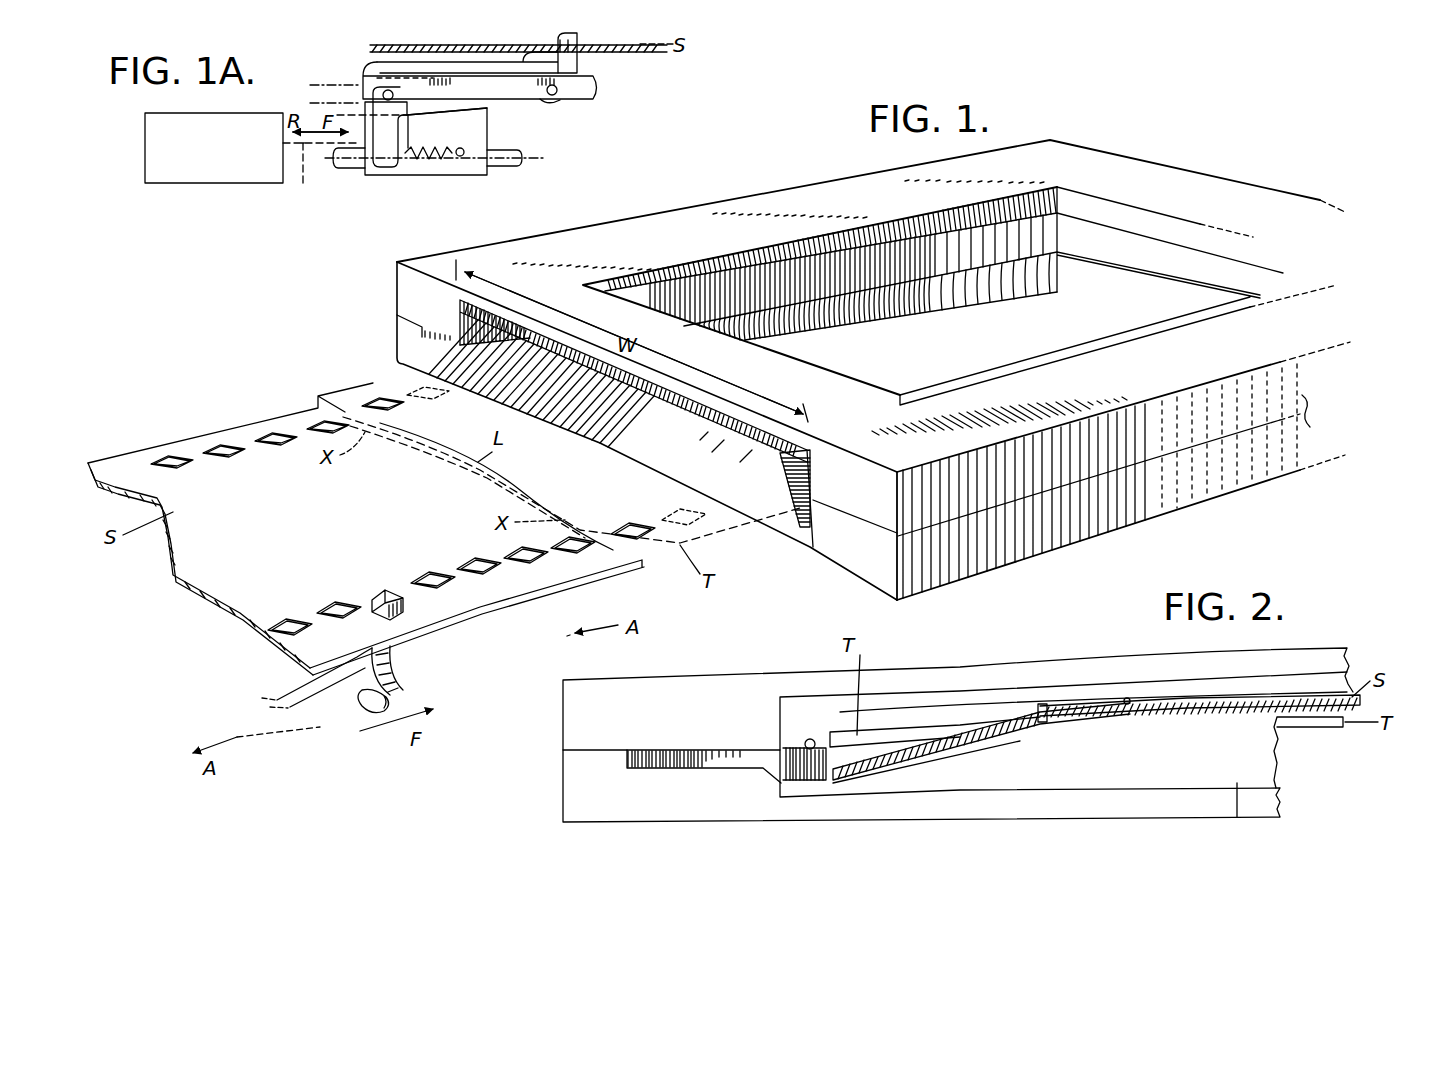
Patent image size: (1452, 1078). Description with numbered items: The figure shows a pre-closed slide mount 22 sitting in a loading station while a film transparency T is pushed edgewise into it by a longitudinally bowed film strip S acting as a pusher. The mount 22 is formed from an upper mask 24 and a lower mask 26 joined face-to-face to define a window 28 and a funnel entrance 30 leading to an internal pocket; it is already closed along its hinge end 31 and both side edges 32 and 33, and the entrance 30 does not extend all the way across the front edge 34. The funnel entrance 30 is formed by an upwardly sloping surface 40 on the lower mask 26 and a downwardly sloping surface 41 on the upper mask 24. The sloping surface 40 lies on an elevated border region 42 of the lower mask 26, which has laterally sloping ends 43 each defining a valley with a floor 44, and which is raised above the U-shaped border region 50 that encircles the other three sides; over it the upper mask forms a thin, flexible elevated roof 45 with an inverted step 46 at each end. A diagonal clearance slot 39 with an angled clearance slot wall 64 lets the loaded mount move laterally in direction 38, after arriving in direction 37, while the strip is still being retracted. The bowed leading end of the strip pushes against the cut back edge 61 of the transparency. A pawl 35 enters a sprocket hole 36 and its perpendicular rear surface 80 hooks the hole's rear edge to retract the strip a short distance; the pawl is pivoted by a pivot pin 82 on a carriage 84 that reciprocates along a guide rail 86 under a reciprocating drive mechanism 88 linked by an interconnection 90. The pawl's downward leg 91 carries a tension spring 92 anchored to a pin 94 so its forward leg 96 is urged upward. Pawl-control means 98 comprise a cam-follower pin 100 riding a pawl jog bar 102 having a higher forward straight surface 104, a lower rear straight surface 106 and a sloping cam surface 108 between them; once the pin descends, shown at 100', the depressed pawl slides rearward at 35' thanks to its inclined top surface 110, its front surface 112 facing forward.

In FIG. 1, the pre-closed slide mount 22 is at (1152, 152).
In FIG. 1, the upper mask 24 is at (1187, 442).
In FIG. 2, the upper mask 24 is at (565, 716).
In FIG. 1, the lower mask 26 is at (1248, 478).
In FIG. 2, the lower mask 26 is at (568, 784).
In FIG. 1, the window 28 is at (989, 350).
In FIG. 1, the funnel entrance 30 is at (780, 503).
In FIG. 2, the funnel entrance 30 is at (1282, 720).
In FIG. 1, the hinge end 31 is at (1222, 194).
In FIG. 1, the side edge 32 is at (820, 186).
In FIG. 1, the side edge 33 is at (1312, 410).
In FIG. 1, the front edge 34 is at (875, 520).
In FIG. 1A, the pawl 35 is at (501, 53).
In FIG. 1, the pawl 35 is at (405, 670).
In FIG. 1A, the depressed pawl position 35' is at (457, 35).
In FIG. 1, the sprocket hole 36 is at (383, 585).
In FIG. 1, the direction of mount movement into loading station 37 is at (385, 306).
In FIG. 1, the direction of mount movement out of loading station 38 is at (1093, 590).
In FIG. 1, the diagonal clearance slot 39 is at (435, 337).
In FIG. 2, the diagonal clearance slot 39 is at (717, 750).
In FIG. 1, the upwardly sloping surface 40 is at (662, 463).
In FIG. 2, the upwardly sloping surface 40 is at (1237, 785).
In FIG. 1, the downwardly sloping surface 41 is at (612, 455).
In FIG. 2, the downwardly sloping surface 41 is at (1293, 682).
In FIG. 2, the elevated border region 42 is at (1201, 770).
In FIG. 1, the laterally sloping end 43 is at (803, 481).
In FIG. 2, the laterally sloping end 43 is at (950, 760).
In FIG. 2, the valley floor 44 is at (883, 778).
In FIG. 2, the elevated roof 45 is at (1127, 698).
In FIG. 2, the inverted step 46 is at (1052, 705).
In FIG. 2, the border region 50 is at (805, 762).
In FIG. 1, the back edge of transparency 61 is at (318, 407).
In FIG. 2, the angled clearance slot wall 64 is at (641, 751).
In FIG. 1A, the rear surface of pawl 80 is at (492, 35).
In FIG. 1, the rear surface of pawl 80 is at (368, 600).
In FIG. 1A, the pivot pin 82 is at (385, 90).
In FIG. 1A, the carriage 84 is at (407, 175).
In FIG. 1A, the guide rail 86 is at (522, 155).
In FIG. 1A, the reciprocating drive mechanism 88 is at (207, 175).
In FIG. 1A, the interconnection 90 is at (320, 174).
In FIG. 1A, the downwardly extending leg 91 is at (378, 170).
In FIG. 1A, the tension spring 92 is at (428, 158).
In FIG. 1A, the pin 94 is at (483, 170).
In FIG. 1A, the forwardly extending leg 96 is at (447, 128).
In FIG. 1, the forwardly extending leg 96 is at (334, 715).
In FIG. 1A, the pawl-control means 98 is at (630, 113).
In FIG. 1A, the cam-follower pin 100 is at (579, 109).
In FIG. 1, the cam-follower pin 100 is at (399, 695).
In FIG. 1A, the cam-follower pin lowered position 100' is at (432, 130).
In FIG. 1A, the pawl jog bar 102 is at (480, 82).
In FIG. 1A, the forward straight surface 104 is at (595, 90).
In FIG. 1A, the rear straight surface 106 is at (507, 107).
In FIG. 1A, the sloping cam surface 108 is at (530, 99).
In FIG. 1A, the inclined top surface of pawl tip 110 is at (560, 38).
In FIG. 1, the inclined top surface of pawl tip 110 is at (392, 585).
In FIG. 1A, the front surface of pawl 112 is at (578, 36).
In FIG. 1, the front surface of pawl 112 is at (408, 597).